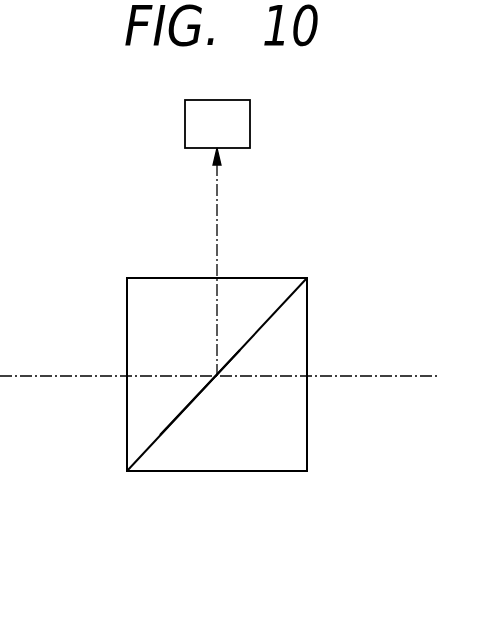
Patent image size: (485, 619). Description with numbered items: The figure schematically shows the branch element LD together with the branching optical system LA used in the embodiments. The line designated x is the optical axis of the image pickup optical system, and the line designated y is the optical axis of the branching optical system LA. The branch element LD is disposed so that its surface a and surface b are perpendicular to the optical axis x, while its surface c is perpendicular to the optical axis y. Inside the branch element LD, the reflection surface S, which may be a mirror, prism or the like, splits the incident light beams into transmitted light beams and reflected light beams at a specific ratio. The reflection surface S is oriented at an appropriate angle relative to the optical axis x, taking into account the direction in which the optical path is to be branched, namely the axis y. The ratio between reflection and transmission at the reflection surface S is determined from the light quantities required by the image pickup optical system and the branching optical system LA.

The branching optical system LA is at (217, 124).
The optical axis of the branching optical system y is at (226, 262).
The optical axis of the image pickup optical system x is at (228, 374).
The surface c is at (160, 278).
The branch element LD is at (255, 289).
The surface a is at (127, 330).
The surface b is at (307, 342).
The reflection surface S is at (194, 403).